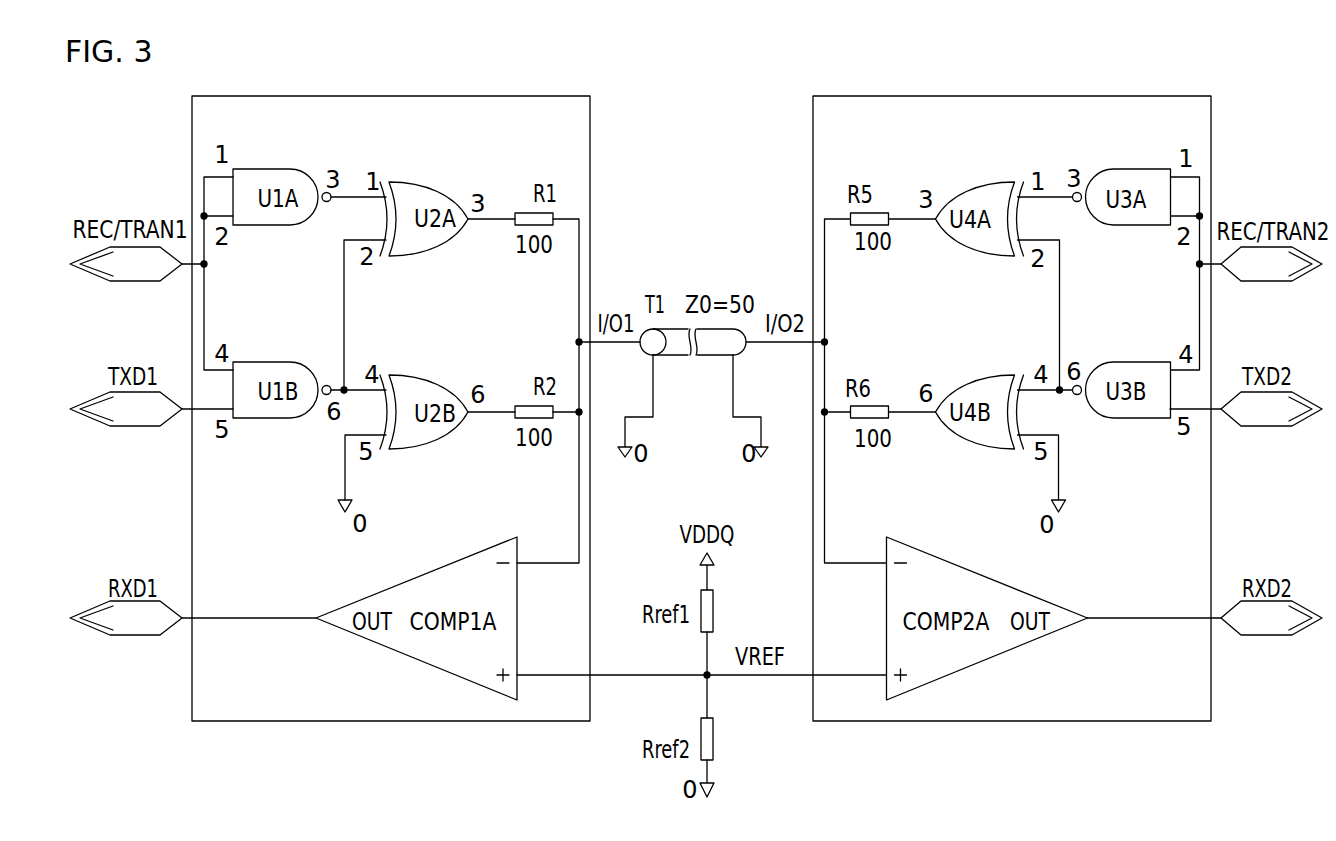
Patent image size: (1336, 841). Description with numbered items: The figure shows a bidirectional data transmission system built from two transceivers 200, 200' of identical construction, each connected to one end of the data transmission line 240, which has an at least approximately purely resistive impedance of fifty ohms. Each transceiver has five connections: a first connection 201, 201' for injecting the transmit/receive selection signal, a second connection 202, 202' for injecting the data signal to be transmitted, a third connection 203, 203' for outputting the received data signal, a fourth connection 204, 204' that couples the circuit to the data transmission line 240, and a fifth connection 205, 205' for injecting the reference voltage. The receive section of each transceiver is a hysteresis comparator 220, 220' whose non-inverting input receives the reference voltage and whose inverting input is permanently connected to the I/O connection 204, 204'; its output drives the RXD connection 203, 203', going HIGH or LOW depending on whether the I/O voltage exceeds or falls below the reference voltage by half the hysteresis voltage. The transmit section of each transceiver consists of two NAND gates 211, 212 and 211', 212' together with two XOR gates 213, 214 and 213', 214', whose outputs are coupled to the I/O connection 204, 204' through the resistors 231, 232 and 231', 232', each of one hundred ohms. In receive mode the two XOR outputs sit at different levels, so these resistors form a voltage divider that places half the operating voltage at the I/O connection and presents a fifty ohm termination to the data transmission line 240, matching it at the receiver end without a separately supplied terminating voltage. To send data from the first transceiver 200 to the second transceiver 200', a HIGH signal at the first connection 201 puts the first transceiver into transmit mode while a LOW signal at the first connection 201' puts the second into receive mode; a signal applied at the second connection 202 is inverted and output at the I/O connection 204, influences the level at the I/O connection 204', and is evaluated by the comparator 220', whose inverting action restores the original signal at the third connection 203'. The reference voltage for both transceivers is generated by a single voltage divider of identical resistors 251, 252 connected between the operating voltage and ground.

The transceiver circuit 200 is at (425, 408).
The second transceiver 200' is at (976, 408).
The first connection 201 is at (137, 294).
The first connection of the second transceiver 201' is at (1260, 294).
The second connection 202 is at (151, 440).
The second connection of the second transceiver 202' is at (1246, 441).
The third connection 203 is at (193, 650).
The third connection of the second transceiver 203' is at (1204, 650).
The fourth connection 204 is at (609, 373).
The I/O connection of the second transceiver 204' is at (786, 373).
The fifth connection 205 is at (612, 705).
The fifth connection of the second transceiver 205' is at (796, 705).
The NAND gate 211 is at (293, 241).
The NAND gate of the second transceiver 211' is at (1110, 241).
The NAND gate 212 is at (309, 329).
The NAND gate of the second transceiver 212' is at (1094, 329).
The XOR gate 213 is at (447, 196).
The XOR gate of the second transceiver 213' is at (956, 193).
The XOR gate 214 is at (426, 419).
The XOR gate of the second transceiver 214' is at (977, 418).
The hysteresis comparator 220 is at (416, 619).
The comparator of the second transceiver 220' is at (987, 619).
The resistor 231 is at (536, 359).
The resistor of the second transceiver 231' is at (869, 358).
The resistor 232 is at (538, 378).
The resistor of the second transceiver 232' is at (868, 378).
The data transmission line 240 is at (705, 358).
The reference resistor Rref1 251 is at (714, 614).
The reference resistor Rref2 252 is at (714, 750).